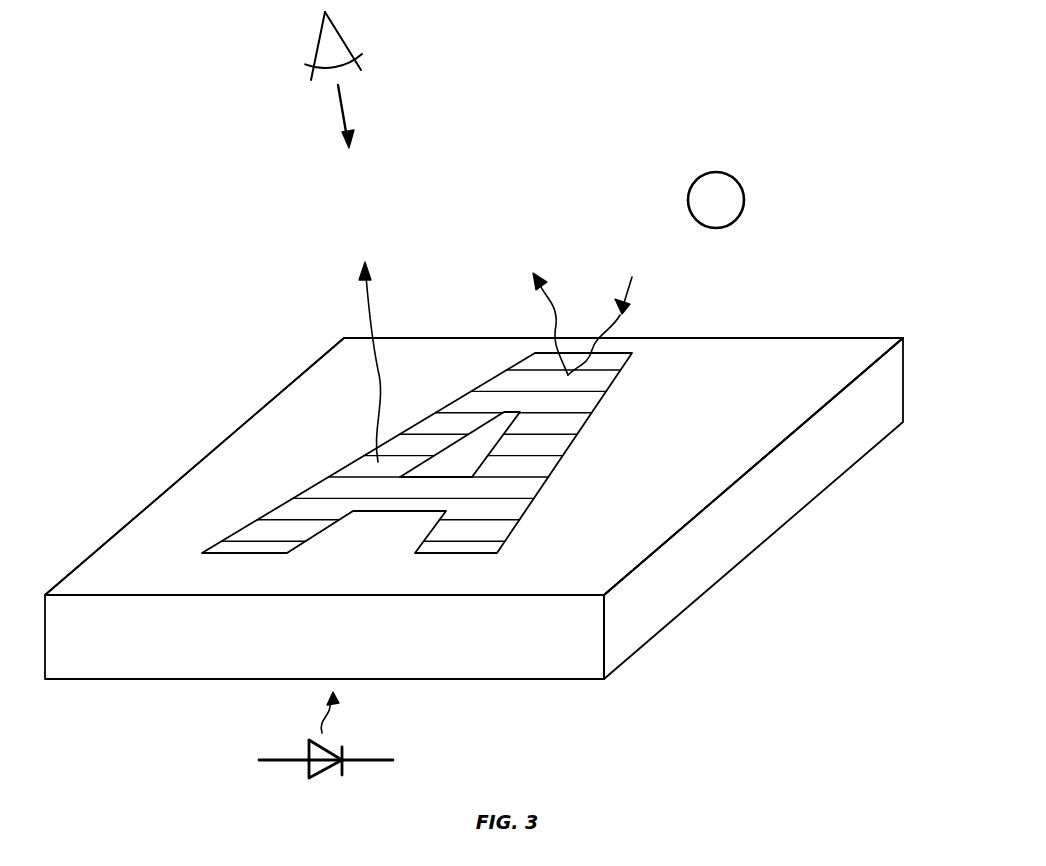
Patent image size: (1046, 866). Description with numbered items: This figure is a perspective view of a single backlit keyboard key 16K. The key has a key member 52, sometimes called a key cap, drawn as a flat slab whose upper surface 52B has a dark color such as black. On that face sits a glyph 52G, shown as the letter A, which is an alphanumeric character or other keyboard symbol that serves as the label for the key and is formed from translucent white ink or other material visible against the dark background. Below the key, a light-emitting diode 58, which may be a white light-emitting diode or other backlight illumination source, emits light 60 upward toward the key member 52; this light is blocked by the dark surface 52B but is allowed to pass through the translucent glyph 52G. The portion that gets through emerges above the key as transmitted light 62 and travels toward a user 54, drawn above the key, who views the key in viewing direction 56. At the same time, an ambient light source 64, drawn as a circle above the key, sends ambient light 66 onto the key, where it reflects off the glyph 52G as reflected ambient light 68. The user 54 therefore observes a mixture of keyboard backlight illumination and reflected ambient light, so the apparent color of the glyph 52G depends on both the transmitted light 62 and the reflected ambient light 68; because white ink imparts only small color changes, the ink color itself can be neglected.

The keyboard key 16K is at (914, 303).
The key member 52 is at (770, 537).
The surface of key member 52B is at (800, 349).
The glyph 52G is at (543, 490).
The user 54 is at (337, 25).
The viewing direction 56 is at (345, 107).
The light-emitting diode 58 is at (328, 774).
The light 60 is at (329, 720).
The transmitted light 62 is at (366, 303).
The ambient light source 64 is at (730, 198).
The ambient light 66 is at (618, 317).
The reflected ambient light 68 is at (552, 312).